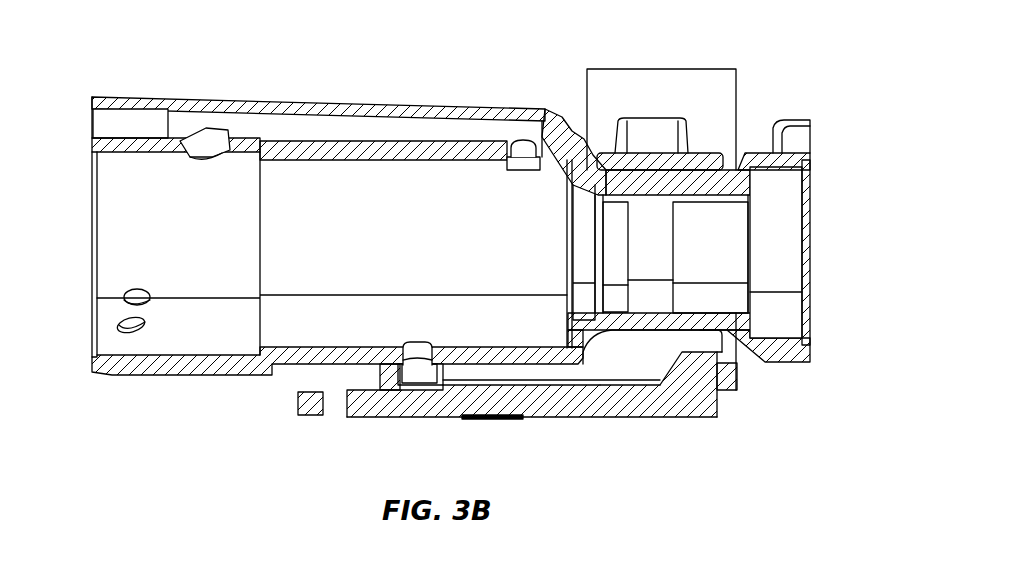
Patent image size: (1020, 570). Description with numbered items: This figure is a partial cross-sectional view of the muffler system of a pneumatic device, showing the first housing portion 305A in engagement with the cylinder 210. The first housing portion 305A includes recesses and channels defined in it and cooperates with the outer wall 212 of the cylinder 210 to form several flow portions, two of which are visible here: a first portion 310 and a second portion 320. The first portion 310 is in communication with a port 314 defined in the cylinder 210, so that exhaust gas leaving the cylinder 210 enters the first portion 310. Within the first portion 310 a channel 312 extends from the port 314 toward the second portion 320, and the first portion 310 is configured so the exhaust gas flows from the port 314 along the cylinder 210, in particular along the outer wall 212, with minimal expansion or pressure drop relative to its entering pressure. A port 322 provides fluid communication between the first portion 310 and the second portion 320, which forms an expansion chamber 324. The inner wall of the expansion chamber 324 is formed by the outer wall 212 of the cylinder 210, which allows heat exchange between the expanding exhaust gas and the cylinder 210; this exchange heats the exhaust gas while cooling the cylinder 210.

The cylinder 210 is at (328, 80).
The outer wall 212 is at (655, 313).
The port 314 is at (416, 336).
The first portion 310 is at (411, 419).
The channel 312 is at (486, 375).
The first housing portion 305A is at (506, 434).
The port 322 is at (581, 372).
The second portion 320 is at (665, 422).
The expansion chamber 324 is at (655, 365).